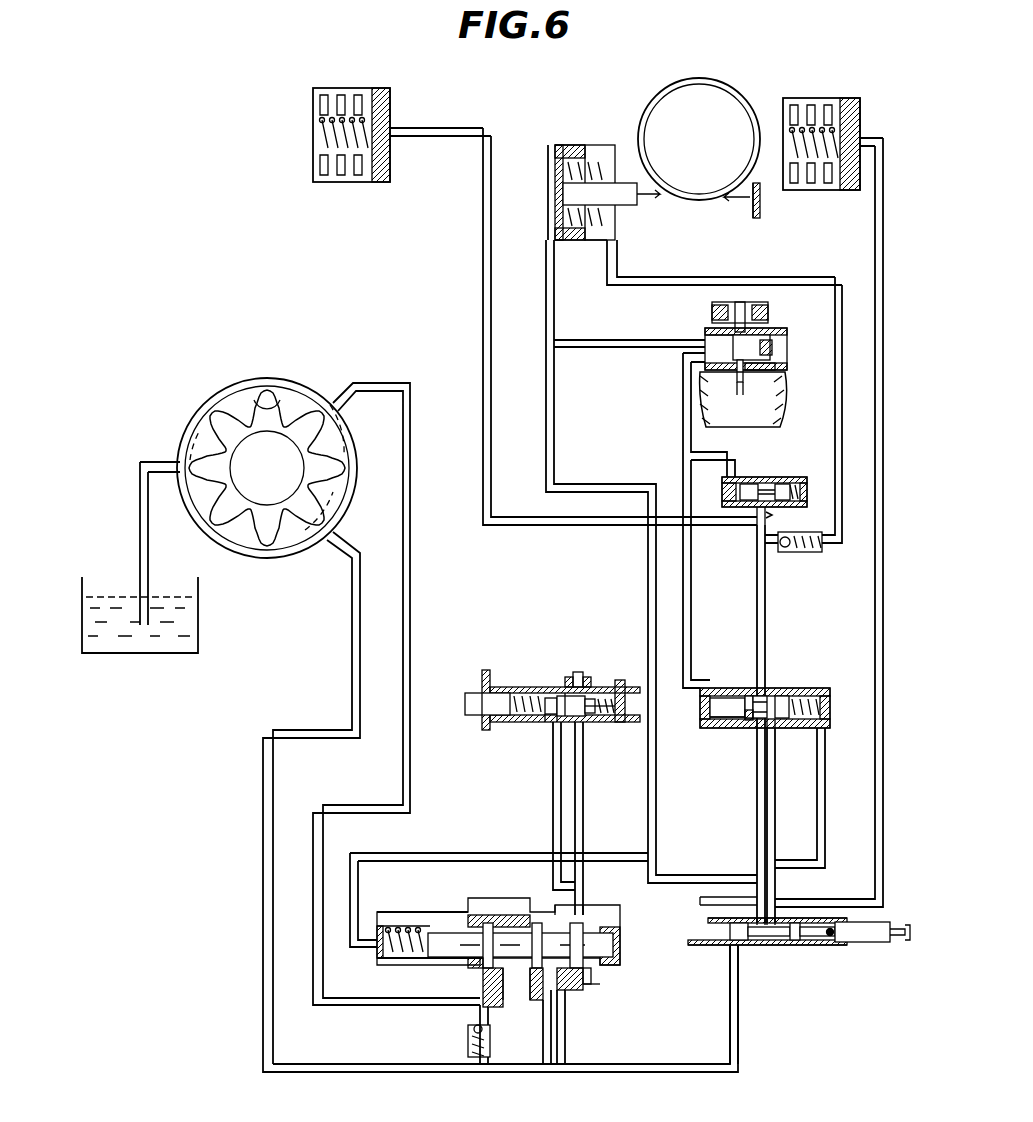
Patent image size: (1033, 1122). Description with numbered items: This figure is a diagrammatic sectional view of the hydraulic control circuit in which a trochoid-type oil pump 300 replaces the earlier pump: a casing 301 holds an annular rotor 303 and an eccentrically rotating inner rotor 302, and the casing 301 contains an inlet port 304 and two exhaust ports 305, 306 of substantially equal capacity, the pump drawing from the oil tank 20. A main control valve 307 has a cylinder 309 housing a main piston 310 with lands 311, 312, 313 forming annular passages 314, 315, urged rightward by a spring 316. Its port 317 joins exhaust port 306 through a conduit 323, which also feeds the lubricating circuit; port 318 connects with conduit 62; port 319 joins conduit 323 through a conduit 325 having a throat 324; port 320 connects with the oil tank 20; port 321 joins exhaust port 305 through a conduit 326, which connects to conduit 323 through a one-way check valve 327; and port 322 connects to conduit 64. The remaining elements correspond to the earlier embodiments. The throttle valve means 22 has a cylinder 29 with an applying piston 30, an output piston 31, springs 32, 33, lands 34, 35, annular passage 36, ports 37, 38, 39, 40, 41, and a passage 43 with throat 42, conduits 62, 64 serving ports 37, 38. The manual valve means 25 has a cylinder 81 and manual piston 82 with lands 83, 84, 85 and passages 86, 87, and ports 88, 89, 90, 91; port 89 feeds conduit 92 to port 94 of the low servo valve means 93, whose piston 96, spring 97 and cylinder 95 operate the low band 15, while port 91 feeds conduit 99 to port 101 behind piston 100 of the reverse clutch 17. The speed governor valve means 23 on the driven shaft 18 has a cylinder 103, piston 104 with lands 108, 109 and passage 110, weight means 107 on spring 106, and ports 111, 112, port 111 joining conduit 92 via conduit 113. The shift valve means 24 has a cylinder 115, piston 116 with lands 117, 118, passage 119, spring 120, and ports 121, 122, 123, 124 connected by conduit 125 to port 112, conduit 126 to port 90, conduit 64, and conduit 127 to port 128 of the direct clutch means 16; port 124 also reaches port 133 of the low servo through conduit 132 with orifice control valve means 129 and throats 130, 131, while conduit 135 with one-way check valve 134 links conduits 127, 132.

The low band 15 is at (686, 82).
The direct clutch means 16 is at (364, 88).
The reverse clutch 17 is at (817, 98).
The driven shaft 18 is at (787, 405).
The oil tank 20 is at (198, 636).
The throttle valve means 22 is at (478, 668).
The speed governor valve means 23 is at (795, 325).
The shift valve means 24 is at (812, 688).
The manual valve means 25 is at (860, 1016).
The cylinder 29 is at (492, 714).
The applying piston 30 is at (465, 705).
The output piston 31 is at (552, 698).
The spring means 32 is at (522, 716).
The spring means 33 is at (626, 692).
The land 34 is at (558, 730).
The land 35 is at (590, 712).
The annular passage 36 is at (562, 690).
The oil port 37 is at (584, 730).
The oil port 38 is at (558, 724).
The oil port 39 is at (566, 690).
The oil port 40 is at (590, 678).
The oil port 41 is at (546, 724).
The throat 42 is at (572, 678).
The passage 43 is at (580, 674).
The conduit 62 is at (583, 827).
The conduit 64 is at (470, 853).
The cylinder 81 is at (834, 942).
The manual piston 82 is at (906, 942).
The land 83 is at (742, 946).
The land 84 is at (795, 946).
The land 85 is at (880, 925).
The annular passage 86 is at (770, 946).
The annular passage 87 is at (816, 946).
The oil port 88 is at (733, 944).
The oil port 89 is at (762, 918).
The oil port 90 is at (776, 918).
The oil port 91 is at (698, 902).
The conduit 92 is at (554, 459).
The low servo valve means 93 is at (548, 145).
The port 94 is at (548, 238).
The cylinder 95 is at (600, 145).
The piston 96 is at (572, 145).
The spring 97 is at (618, 215).
The conduit 99 is at (883, 430).
The piston 100 is at (849, 188).
The oil port 101 is at (863, 140).
The cylinder 103 is at (778, 345).
The piston 104 is at (745, 372).
The spring 106 is at (752, 300).
The weight means 107 is at (712, 312).
The land 108 is at (738, 385).
The land 109 is at (778, 350).
The annular passage 110 is at (778, 362).
The oil port 111 is at (722, 340).
The oil port 112 is at (700, 358).
The conduit 113 is at (612, 348).
The cylinder 115 is at (724, 702).
The piston 116 is at (745, 724).
The land 117 is at (722, 722).
The land 118 is at (790, 695).
The annular passage 119 is at (750, 694).
The spring 120 is at (812, 694).
The oil port 121 is at (700, 688).
The oil port 122 is at (770, 732).
The port 123 is at (825, 732).
The port 124 is at (764, 694).
The conduit 125 is at (692, 597).
The conduit 126 is at (767, 817).
The conduit 127 is at (483, 455).
The oil port 128 is at (396, 130).
The orifice control valve means 129 is at (792, 480).
The throat portion 130 is at (760, 528).
The throat portion 131 is at (775, 508).
The conduit 132 is at (842, 450).
The oil port 133 is at (620, 258).
The one-way check valve 134 is at (802, 552).
The conduit 135 is at (842, 540).
The trochoid-type oil pump 300 is at (173, 412).
The casing 301 is at (226, 390).
The inner rotor 302 is at (276, 412).
The annular rotor 303 is at (286, 398).
The inlet port 304 is at (268, 398).
The exhaust port 305 is at (340, 432).
The exhaust port 306 is at (312, 550).
The main control valve 307 is at (398, 902).
The cylinder 309 is at (412, 926).
The main piston 310 is at (442, 950).
The land 311 is at (472, 912).
The land 312 is at (538, 920).
The land 313 is at (590, 922).
The annular passage 314 is at (490, 923).
The annular passage 315 is at (560, 1010).
The spring 316 is at (396, 926).
The port 317 is at (540, 1000).
The port 318 is at (568, 898).
The port 319 is at (598, 974).
The port 320 is at (517, 983).
The port 321 is at (474, 970).
The port 322 is at (370, 950).
The conduit 323 is at (353, 1074).
The throat 324 is at (570, 992).
The conduit 325 is at (596, 986).
The conduit 326 is at (412, 788).
The one-way check valve 327 is at (468, 1036).